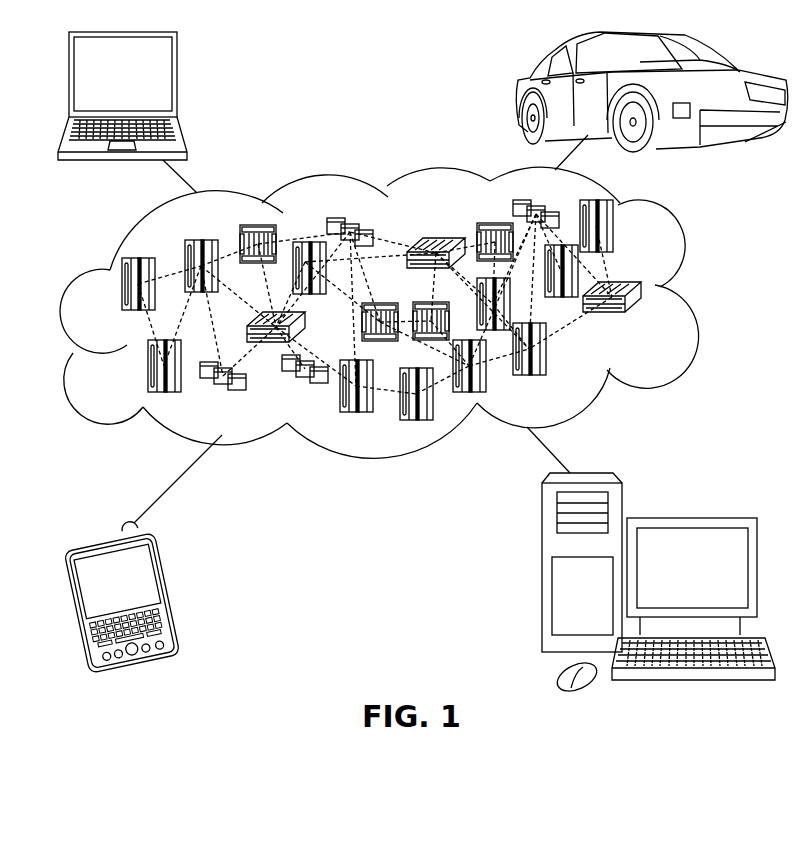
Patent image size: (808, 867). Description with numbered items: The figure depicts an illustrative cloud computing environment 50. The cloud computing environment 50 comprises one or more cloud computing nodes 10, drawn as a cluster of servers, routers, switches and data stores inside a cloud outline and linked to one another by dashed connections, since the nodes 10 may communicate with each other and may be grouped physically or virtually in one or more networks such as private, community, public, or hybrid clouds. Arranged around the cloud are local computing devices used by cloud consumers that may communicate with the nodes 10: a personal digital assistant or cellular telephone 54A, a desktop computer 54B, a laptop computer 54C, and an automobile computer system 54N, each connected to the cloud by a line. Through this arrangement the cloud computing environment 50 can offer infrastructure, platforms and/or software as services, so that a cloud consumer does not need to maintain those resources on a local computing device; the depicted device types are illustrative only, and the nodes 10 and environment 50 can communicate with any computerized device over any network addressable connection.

The cloud computing nodes 10 is at (645, 315).
The cloud computing environment 50 is at (692, 296).
The personal digital assistant (PDA) or cellular telephone 54A is at (171, 592).
The desktop computer 54B is at (690, 518).
The laptop computer 54C is at (177, 80).
The automobile computer system 54N is at (518, 92).